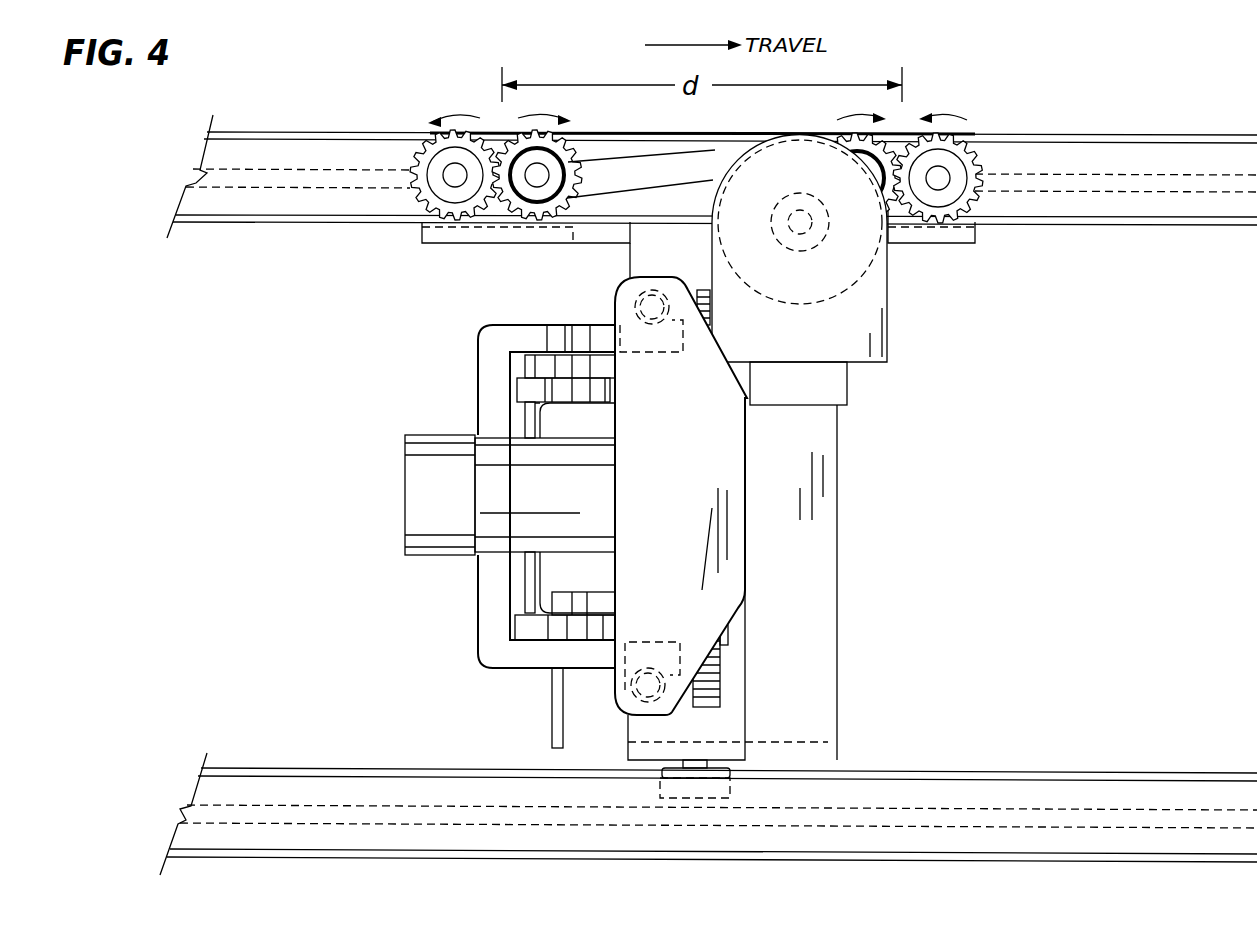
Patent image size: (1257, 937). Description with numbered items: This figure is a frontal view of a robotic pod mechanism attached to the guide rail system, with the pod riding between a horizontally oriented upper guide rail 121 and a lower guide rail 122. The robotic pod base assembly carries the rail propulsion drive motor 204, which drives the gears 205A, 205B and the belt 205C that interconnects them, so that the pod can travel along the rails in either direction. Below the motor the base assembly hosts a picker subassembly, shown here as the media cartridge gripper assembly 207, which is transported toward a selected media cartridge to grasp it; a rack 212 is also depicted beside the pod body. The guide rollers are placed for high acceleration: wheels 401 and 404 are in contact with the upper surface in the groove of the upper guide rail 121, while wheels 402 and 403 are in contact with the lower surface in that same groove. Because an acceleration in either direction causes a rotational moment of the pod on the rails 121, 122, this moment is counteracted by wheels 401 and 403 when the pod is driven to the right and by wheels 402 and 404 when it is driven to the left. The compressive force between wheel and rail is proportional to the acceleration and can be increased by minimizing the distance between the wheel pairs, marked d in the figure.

The upper guide rail 121 is at (1190, 227).
The lower guide rail 122 is at (1124, 770).
The rail propulsion drive motor 204 is at (888, 340).
The drive gear 205A is at (939, 193).
The drive gear 205B is at (502, 186).
The belt 205C is at (657, 160).
The media cartridge gripper assembly 207 is at (478, 360).
The rack 212 is at (720, 667).
The wheel 401 is at (446, 229).
The wheel 402 is at (530, 235).
The wheel 403 is at (962, 232).
The wheel 404 is at (898, 219).